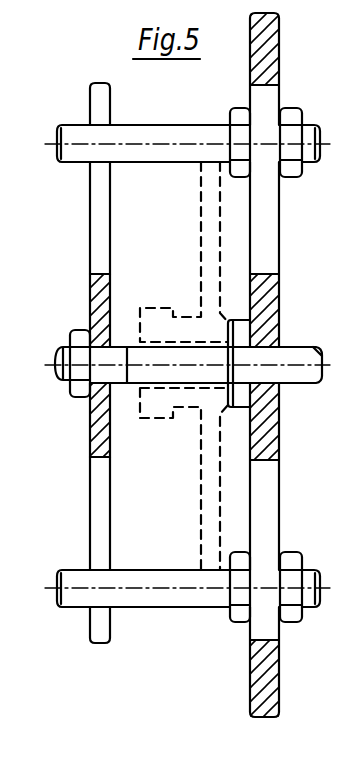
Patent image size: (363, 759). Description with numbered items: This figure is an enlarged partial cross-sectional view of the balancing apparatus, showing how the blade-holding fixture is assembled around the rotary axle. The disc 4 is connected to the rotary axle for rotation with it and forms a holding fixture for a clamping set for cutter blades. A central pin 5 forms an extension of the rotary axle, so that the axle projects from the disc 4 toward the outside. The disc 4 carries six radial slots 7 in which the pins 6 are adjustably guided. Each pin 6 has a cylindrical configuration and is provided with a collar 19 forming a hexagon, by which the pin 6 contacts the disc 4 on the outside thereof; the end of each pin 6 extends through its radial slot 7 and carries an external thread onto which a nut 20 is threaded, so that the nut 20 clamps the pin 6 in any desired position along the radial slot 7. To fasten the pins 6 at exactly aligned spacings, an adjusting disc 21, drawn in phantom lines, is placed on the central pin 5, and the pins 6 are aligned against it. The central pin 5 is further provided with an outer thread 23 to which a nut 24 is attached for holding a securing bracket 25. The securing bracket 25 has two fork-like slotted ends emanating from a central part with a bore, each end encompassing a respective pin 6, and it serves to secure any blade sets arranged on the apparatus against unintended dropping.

The disc 4 is at (265, 673).
The central pin 5 is at (138, 376).
The pins 6 is at (159, 135).
The radial slots 7 is at (265, 257).
The collar 19 is at (241, 110).
The nut 20 is at (291, 112).
The adjusting disc 21 is at (200, 212).
The outer thread 23 is at (58, 355).
The nut 24 is at (80, 340).
The securing bracket 25 is at (89, 212).